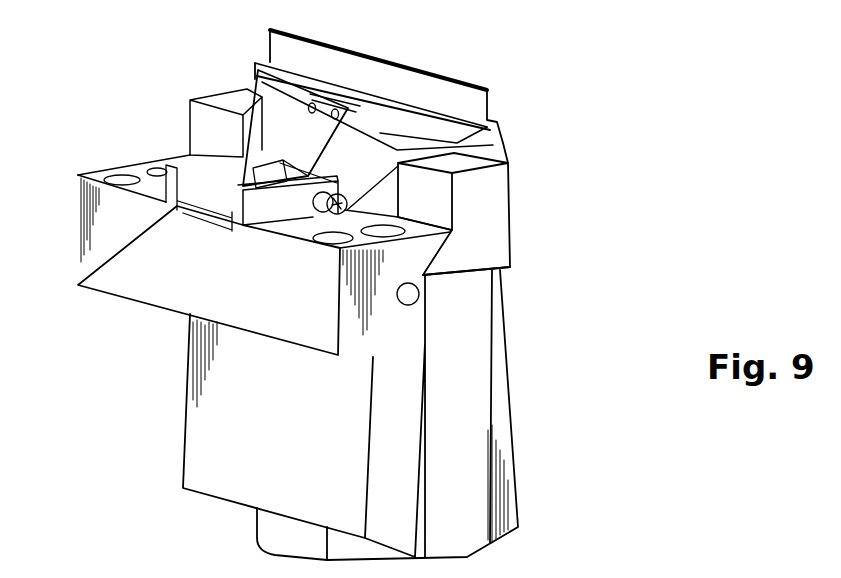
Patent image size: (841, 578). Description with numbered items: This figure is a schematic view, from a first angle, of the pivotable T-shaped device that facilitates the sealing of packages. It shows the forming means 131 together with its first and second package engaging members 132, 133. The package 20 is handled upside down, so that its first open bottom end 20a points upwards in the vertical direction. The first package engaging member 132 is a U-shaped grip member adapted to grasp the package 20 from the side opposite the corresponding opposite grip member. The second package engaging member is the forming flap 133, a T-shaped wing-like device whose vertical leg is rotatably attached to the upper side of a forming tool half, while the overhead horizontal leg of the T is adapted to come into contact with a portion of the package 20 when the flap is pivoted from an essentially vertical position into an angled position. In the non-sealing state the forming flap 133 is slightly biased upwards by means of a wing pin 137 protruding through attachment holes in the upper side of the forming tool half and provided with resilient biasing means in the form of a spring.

The package 20 is at (515, 442).
The first open bottom end 20a is at (520, 112).
The forming means 131 is at (128, 328).
The first package engaging member 132 is at (492, 217).
The forming flap 133 is at (306, 143).
The wing pin 137 is at (323, 212).